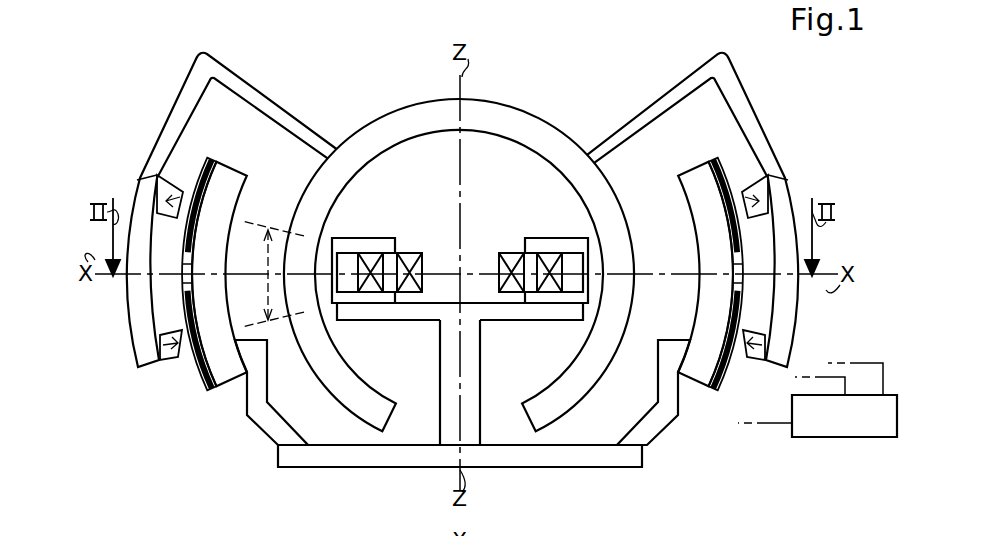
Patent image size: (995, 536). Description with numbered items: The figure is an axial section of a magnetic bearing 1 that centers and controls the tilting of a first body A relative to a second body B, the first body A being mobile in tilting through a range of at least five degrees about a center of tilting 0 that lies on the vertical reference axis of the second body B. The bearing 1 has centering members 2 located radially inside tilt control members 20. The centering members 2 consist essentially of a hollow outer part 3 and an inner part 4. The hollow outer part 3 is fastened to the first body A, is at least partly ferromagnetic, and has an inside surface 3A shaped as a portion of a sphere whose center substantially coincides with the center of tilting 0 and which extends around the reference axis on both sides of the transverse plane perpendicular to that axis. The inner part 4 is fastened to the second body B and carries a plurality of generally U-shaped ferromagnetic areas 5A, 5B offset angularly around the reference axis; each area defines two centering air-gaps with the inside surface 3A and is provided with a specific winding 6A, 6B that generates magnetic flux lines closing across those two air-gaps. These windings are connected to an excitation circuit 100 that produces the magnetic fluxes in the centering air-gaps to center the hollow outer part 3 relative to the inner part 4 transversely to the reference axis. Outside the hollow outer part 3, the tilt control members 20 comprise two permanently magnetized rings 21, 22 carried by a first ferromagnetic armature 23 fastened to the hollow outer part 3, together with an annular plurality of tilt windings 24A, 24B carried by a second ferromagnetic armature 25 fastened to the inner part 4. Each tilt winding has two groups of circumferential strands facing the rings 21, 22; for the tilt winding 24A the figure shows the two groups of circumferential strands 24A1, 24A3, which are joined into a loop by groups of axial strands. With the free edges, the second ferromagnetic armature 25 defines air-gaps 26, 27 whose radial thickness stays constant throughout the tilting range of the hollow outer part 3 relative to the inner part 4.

The magnetic bearing 1 is at (596, 113).
The centering members 2 is at (552, 124).
The hollow outer part 3 is at (523, 107).
The inside surface 3A is at (364, 376).
The inner part 4 is at (419, 251).
The U-shaped ferromagnetic area 5A is at (373, 304).
The U-shaped ferromagnetic area 5B is at (553, 241).
The winding 6A is at (408, 251).
The winding 6B is at (570, 263).
The tilt control members 20 is at (776, 149).
The permanently magnetized ring 21 is at (172, 185).
The permanently magnetized ring 22 is at (173, 363).
The first ferromagnetic armature 23 is at (129, 328).
The tilt winding 24A is at (179, 256).
The group of circumferential strands 24A1 is at (222, 141).
The group of circumferential strands 24A3 is at (205, 387).
The tilt winding 24B is at (745, 306).
The second ferromagnetic armature 25 is at (237, 203).
The air-gap 26 is at (190, 180).
The air-gap 27 is at (192, 361).
The excitation circuit 100 is at (817, 400).
The first body A is at (291, 119).
The second body B is at (656, 430).
The center of tilting 0 is at (461, 276).